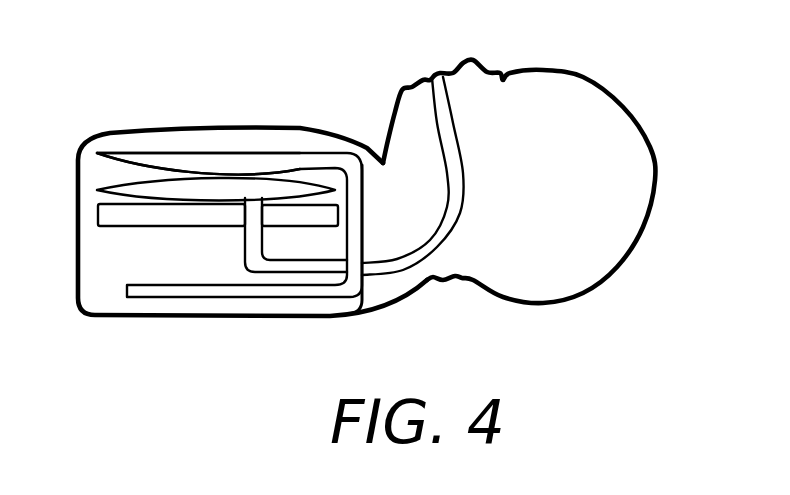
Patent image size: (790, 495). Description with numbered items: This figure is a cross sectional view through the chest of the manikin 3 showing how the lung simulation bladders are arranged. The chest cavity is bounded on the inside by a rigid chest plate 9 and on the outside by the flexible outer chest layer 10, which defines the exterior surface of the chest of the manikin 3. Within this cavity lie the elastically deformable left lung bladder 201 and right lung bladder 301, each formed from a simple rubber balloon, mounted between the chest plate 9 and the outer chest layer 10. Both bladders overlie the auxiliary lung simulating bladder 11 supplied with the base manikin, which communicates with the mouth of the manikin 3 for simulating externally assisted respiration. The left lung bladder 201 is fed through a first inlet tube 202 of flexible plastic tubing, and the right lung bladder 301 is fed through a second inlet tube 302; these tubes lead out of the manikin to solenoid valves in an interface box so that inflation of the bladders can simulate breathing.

The manikin 3 is at (115, 320).
The rigid chest plate 9 is at (113, 227).
The flexible outer chest layer 10 is at (302, 128).
The auxiliary lung simulating bladder 11 is at (118, 188).
The left lung bladder 201 is at (198, 111).
The right lung bladder 301 is at (186, 160).
The first inlet tube 202 is at (270, 258).
The second inlet tube 302 is at (280, 300).